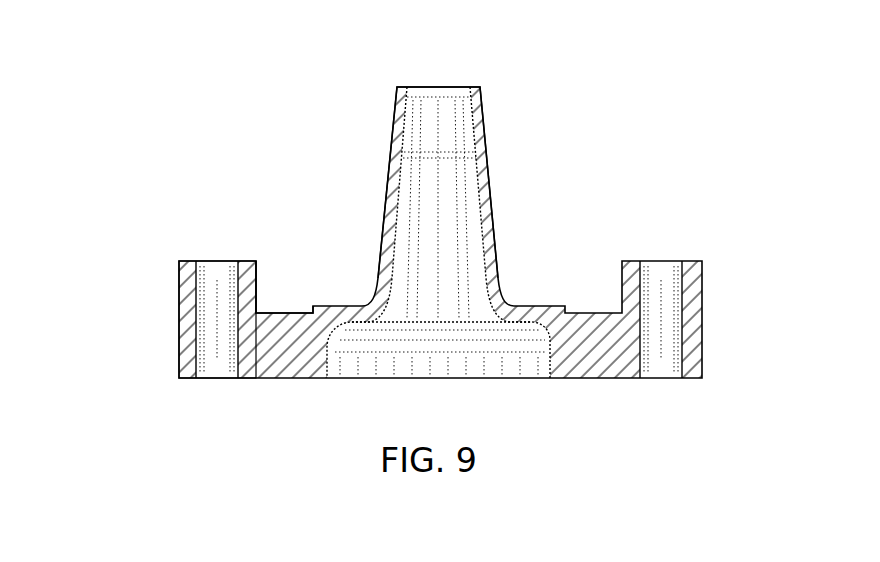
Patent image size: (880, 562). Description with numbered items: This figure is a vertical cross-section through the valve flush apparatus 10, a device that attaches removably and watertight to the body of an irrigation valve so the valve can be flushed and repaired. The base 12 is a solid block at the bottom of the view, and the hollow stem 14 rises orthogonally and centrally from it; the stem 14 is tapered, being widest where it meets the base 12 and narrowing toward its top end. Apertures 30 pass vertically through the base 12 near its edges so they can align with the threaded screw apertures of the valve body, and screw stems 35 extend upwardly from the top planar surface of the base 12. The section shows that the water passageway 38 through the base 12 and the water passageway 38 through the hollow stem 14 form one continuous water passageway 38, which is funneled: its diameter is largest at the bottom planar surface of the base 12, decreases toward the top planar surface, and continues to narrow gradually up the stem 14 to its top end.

The valve flush apparatus 10 is at (214, 68).
The base 12 is at (298, 357).
The stem 14 is at (483, 193).
The apertures 30 is at (216, 293).
The screw stems 35 is at (258, 287).
The water passageway 38 is at (455, 250).